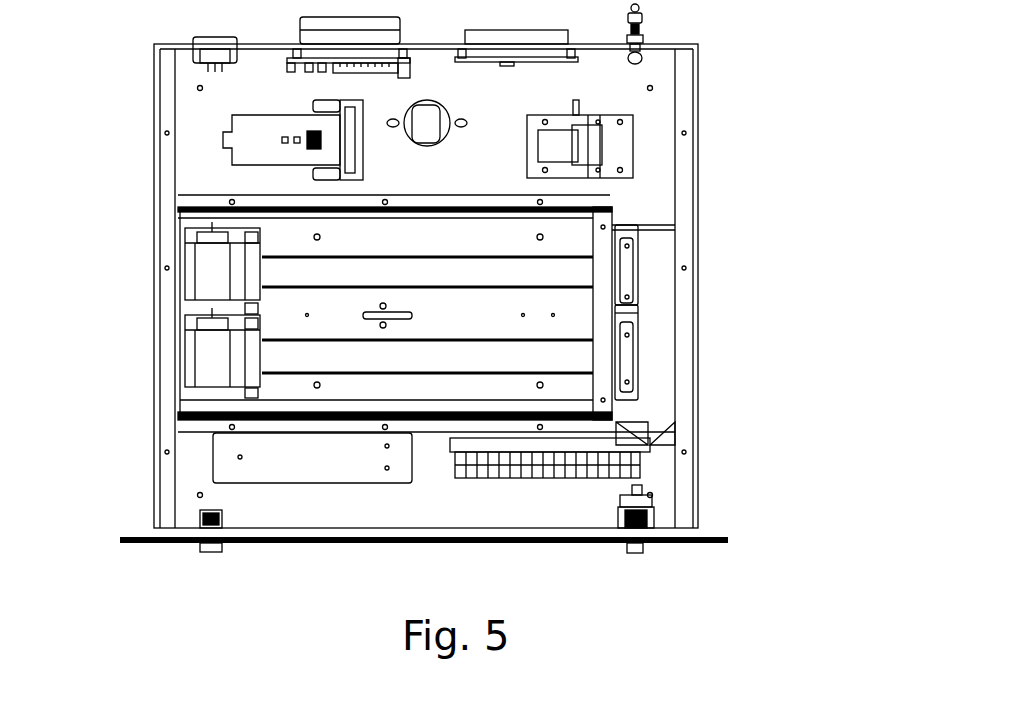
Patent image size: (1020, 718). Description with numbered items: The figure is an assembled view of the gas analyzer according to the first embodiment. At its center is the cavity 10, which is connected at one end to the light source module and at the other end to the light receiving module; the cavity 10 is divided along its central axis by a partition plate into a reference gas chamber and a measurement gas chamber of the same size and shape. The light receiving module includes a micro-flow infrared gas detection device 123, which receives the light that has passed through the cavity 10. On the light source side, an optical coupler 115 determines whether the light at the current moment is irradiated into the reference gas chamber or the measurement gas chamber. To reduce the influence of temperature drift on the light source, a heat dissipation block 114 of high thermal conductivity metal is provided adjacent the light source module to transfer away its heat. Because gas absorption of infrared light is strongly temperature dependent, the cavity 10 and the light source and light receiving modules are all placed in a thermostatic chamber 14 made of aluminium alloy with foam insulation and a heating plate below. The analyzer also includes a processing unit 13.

The thermostatic chamber 14 is at (605, 193).
The cavity 10 is at (570, 278).
The optical coupler 115 is at (630, 280).
The heat dissipation block 114 is at (630, 352).
The micro-flow infrared gas detection device 123 is at (200, 275).
The processing unit 13 is at (650, 462).